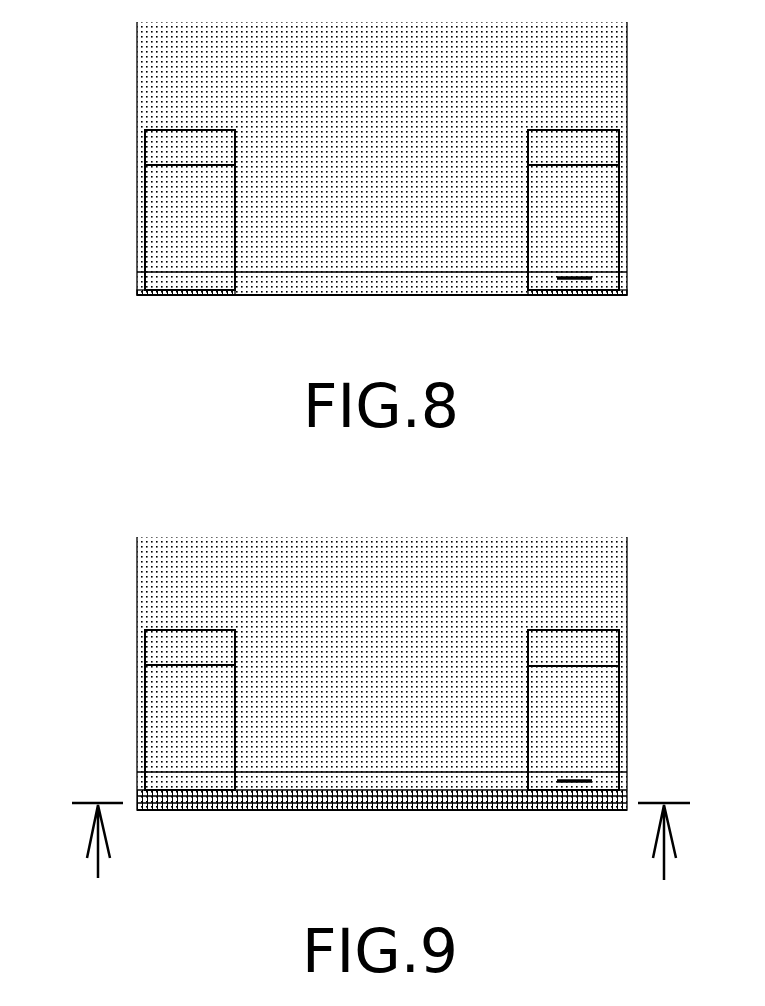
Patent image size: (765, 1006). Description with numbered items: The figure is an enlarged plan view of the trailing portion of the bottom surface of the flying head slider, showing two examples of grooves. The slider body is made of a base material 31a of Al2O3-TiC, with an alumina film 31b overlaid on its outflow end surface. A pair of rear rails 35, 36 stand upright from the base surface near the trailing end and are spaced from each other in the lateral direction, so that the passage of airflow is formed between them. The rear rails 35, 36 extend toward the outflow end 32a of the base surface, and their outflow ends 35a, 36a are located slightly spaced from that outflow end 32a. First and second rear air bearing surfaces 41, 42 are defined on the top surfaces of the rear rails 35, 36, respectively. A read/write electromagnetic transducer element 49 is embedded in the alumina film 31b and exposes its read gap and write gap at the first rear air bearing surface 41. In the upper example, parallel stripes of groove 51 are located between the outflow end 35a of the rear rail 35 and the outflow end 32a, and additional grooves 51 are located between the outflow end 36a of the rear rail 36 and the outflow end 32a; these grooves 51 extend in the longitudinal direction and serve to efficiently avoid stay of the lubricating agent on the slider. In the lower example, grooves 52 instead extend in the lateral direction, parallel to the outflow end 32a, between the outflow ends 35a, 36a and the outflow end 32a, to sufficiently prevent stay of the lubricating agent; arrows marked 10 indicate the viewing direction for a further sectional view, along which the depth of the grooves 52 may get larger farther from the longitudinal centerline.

In FIG. 9, the section line / viewing direction 10 is at (390, 878).
In FIG. 8, the base material 31a is at (137, 72).
In FIG. 9, the base material 31a is at (137, 590).
In FIG. 8, the alumina film 31b is at (137, 273).
In FIG. 9, the alumina film 31b is at (137, 786).
In FIG. 8, the outflow end of the base surface 32a is at (445, 297).
In FIG. 9, the outflow end of the base surface 32a is at (413, 812).
In FIG. 8, the rear rail 35 is at (619, 137).
In FIG. 9, the rear rail 35 is at (619, 652).
In FIG. 8, the outflow end of the rear rail 35a is at (538, 294).
In FIG. 9, the outflow end of the rear rail 35a is at (543, 793).
In FIG. 8, the rear rail 36 is at (145, 146).
In FIG. 9, the rear rail 36 is at (145, 663).
In FIG. 8, the outflow end of the rear rail 36a is at (200, 294).
In FIG. 9, the outflow end of the rear rail 36a is at (200, 792).
In FIG. 8, the first rear air bearing surface 41 is at (600, 205).
In FIG. 9, the first rear air bearing surface 41 is at (600, 718).
In FIG. 8, the second rear air bearing surface 42 is at (158, 208).
In FIG. 9, the second rear air bearing surface 42 is at (158, 723).
In FIG. 8, the read/write electromagnetic transducer element 49 is at (578, 278).
In FIG. 9, the read/write electromagnetic transducer element 49 is at (578, 781).
In FIG. 8, the grooves 51 is at (140, 294).
In FIG. 9, the grooves 52 is at (587, 806).